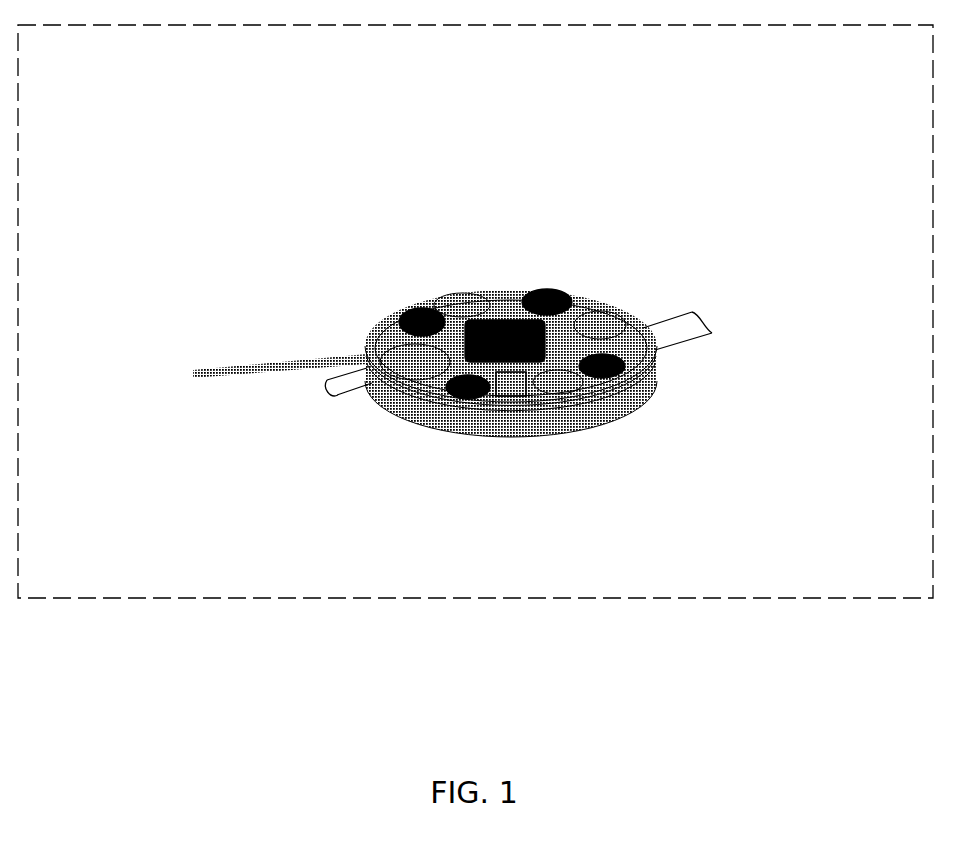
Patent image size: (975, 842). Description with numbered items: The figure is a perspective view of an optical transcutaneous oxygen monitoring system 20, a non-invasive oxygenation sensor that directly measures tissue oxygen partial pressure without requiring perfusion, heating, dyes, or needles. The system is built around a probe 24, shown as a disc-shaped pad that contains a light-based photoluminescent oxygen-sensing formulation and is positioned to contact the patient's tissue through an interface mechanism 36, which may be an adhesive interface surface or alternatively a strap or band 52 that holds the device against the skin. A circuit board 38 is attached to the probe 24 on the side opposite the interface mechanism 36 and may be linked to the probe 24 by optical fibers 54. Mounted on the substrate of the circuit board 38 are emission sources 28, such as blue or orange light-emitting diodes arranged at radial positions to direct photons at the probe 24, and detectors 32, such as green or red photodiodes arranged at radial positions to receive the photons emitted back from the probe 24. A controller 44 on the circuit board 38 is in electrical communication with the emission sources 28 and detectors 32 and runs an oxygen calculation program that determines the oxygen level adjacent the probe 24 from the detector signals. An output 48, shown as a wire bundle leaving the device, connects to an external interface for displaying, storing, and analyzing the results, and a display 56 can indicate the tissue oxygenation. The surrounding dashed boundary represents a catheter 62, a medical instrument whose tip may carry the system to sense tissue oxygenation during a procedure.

The optical transcutaneous oxygen monitoring system 20 is at (199, 102).
The probe 24 is at (425, 412).
The emission sources 28 is at (402, 313).
The detectors 32 is at (460, 298).
The interface mechanism 36 is at (527, 432).
The circuit board 38 is at (516, 306).
The controller 44 is at (496, 320).
The output 48 is at (229, 371).
The band 52 is at (327, 384).
The optical fibers 54 is at (442, 400).
The display 56 is at (511, 397).
The catheter 62 is at (820, 598).